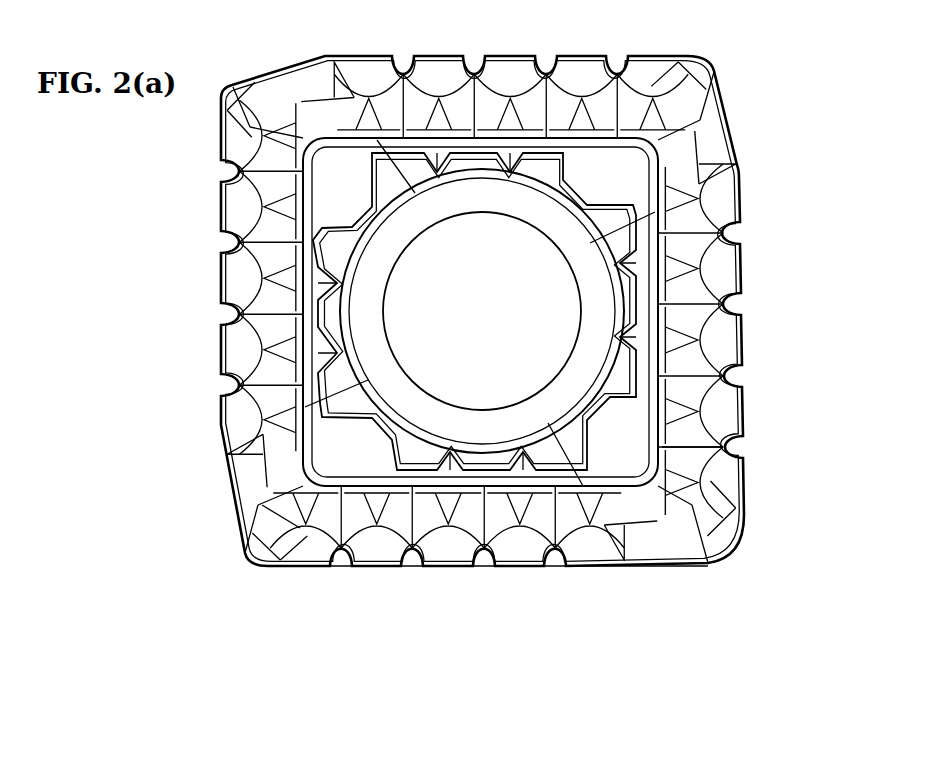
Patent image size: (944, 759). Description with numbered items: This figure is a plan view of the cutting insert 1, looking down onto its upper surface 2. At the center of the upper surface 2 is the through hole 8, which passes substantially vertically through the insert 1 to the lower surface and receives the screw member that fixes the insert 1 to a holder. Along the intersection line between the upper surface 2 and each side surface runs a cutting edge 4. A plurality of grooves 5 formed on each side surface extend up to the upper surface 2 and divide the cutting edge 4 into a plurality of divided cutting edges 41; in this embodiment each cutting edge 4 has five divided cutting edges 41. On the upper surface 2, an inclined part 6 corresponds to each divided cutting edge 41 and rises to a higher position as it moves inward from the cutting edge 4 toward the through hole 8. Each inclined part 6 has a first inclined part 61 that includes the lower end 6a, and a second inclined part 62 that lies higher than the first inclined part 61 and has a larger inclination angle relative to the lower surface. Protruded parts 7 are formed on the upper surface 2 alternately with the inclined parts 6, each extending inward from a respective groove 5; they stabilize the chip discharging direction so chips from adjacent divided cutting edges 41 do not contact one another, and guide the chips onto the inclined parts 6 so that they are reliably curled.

The cutting insert 1 is at (750, 108).
The upper surface 2 is at (723, 200).
The cutting edge 4 is at (640, 657).
The divided cutting edge 41 is at (592, 575).
The groove 5 is at (558, 569).
The inclined part 6 is at (174, 517).
The first inclined part 61 is at (295, 558).
The second inclined part 62 is at (317, 526).
The lower end 6a is at (622, 566).
The protruded part 7 is at (700, 451).
The through hole 8 is at (494, 262).